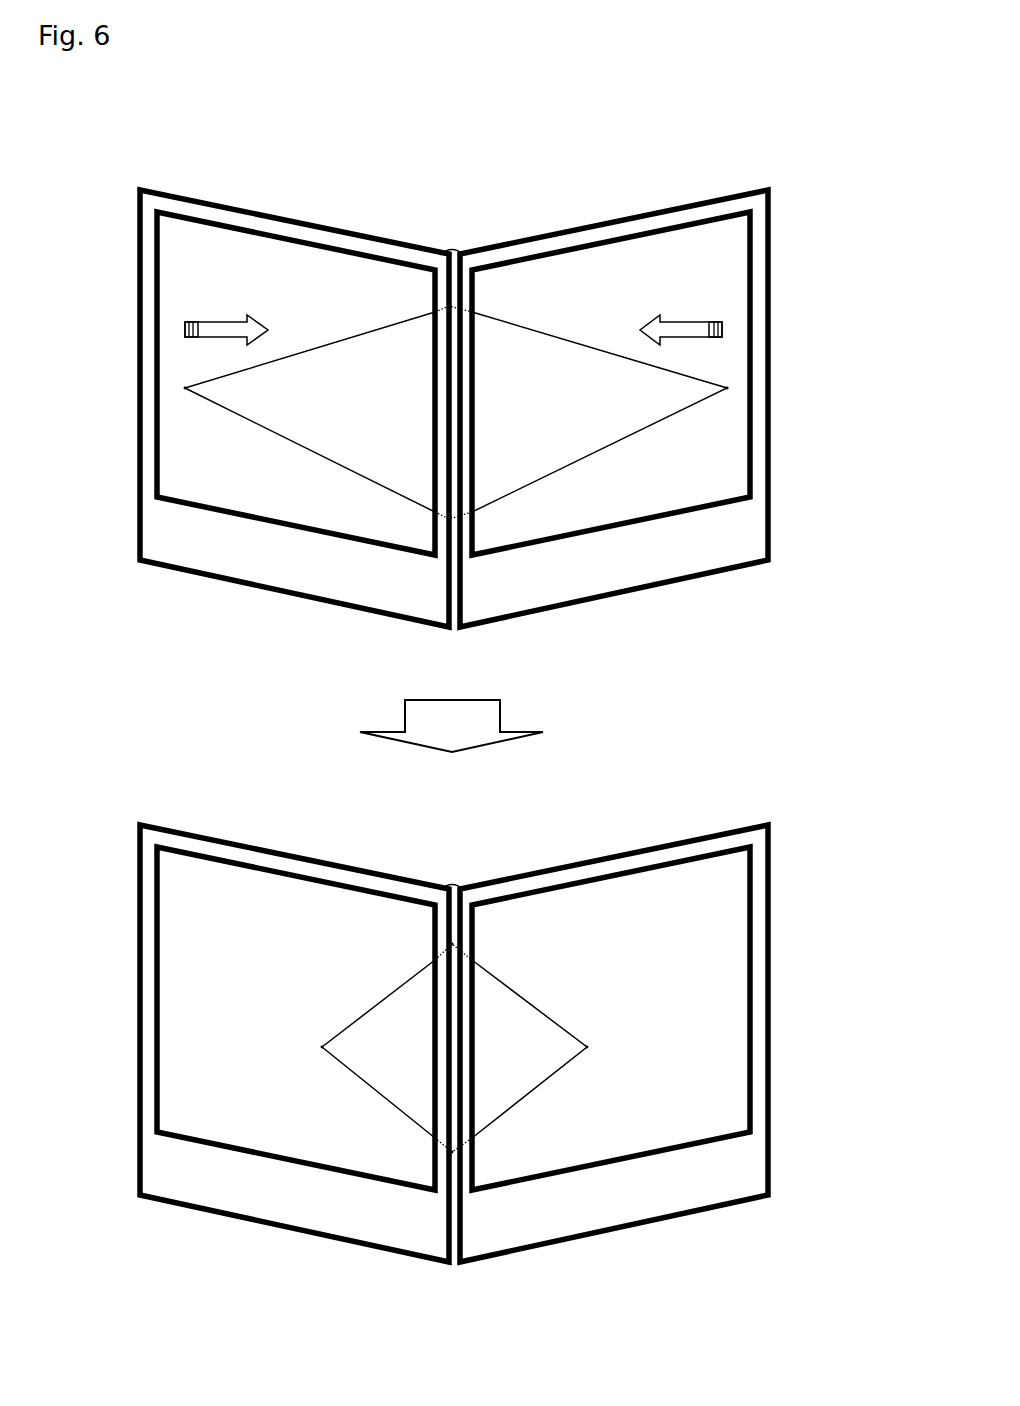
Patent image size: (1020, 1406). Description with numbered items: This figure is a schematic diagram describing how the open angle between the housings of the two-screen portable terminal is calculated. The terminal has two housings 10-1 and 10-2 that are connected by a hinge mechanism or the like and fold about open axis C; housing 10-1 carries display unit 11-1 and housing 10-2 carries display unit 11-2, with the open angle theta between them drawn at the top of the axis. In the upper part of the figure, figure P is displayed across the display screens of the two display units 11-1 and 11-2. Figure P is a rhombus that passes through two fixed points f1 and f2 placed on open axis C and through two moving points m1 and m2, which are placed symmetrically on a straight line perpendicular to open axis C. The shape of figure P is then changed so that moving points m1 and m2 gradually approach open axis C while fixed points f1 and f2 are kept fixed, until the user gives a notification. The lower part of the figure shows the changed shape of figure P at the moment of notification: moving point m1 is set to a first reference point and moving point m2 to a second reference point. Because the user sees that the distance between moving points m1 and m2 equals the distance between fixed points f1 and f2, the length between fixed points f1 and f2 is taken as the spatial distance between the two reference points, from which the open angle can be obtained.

The housing 10-1 is at (663, 847).
The housing 10-2 is at (243, 844).
The display unit 11-1 is at (750, 333).
The display unit 11-2 is at (157, 333).
The open axis C is at (460, 604).
The figure P is at (500, 980).
The fixed point f1 is at (448, 306).
The fixed point f2 is at (448, 519).
The moving point m1 is at (662, 736).
The moving point m2 is at (246, 736).
The angle between housings theta is at (452, 555).